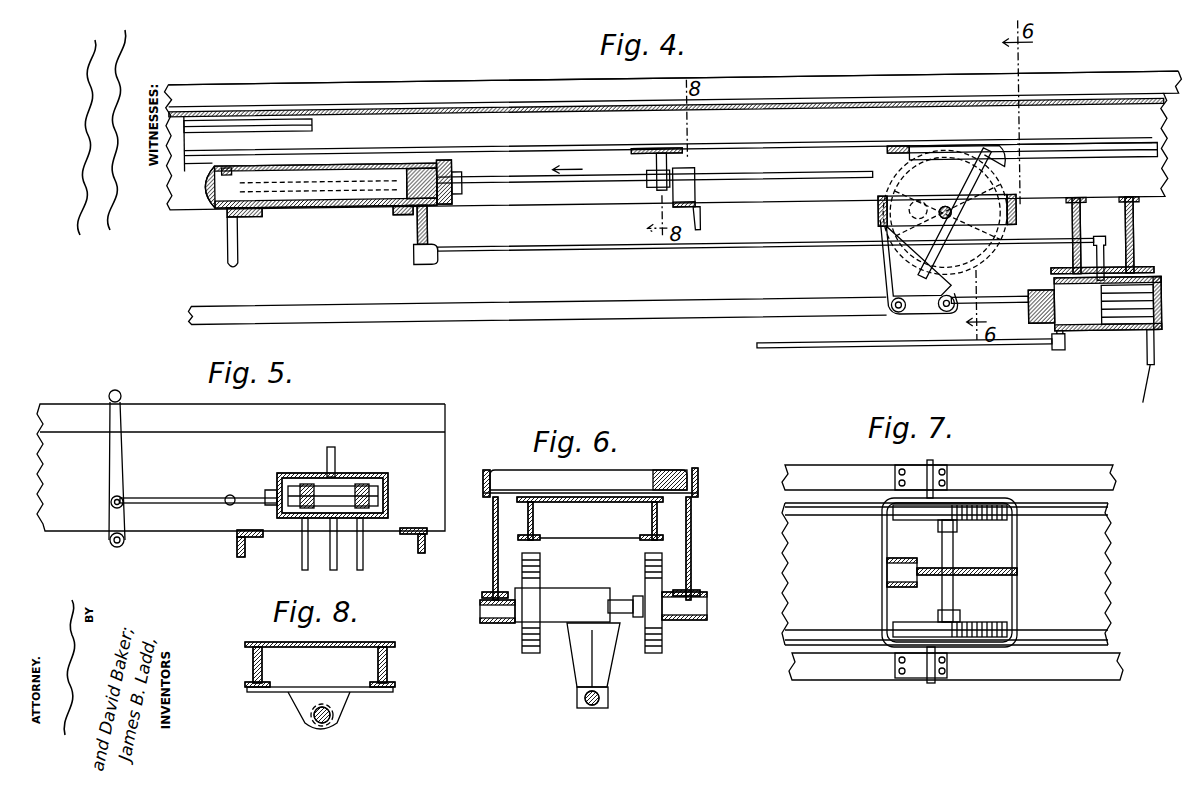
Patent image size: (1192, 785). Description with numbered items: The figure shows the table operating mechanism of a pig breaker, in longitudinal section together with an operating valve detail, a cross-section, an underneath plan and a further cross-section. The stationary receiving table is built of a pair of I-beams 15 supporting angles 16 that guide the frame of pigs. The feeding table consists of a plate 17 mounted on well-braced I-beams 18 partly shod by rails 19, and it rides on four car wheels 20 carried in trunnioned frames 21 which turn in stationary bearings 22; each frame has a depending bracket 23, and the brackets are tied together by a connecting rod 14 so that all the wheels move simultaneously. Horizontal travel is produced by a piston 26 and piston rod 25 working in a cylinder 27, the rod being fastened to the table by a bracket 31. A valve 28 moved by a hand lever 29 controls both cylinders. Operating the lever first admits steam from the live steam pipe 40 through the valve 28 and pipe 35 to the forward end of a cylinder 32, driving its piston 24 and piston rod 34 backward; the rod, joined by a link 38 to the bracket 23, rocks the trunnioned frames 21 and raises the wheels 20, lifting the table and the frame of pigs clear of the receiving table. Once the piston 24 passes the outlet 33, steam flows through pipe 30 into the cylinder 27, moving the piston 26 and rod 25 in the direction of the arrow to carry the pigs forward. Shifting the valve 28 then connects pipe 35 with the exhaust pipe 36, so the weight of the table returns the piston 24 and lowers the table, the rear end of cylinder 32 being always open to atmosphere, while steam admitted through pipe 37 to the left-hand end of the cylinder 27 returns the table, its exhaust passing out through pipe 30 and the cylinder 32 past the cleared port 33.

In FIG. 4, the connecting rod 14 is at (582, 320).
In FIG. 4, the I-beams 15 is at (193, 197).
In FIG. 5, the I-beams 15 is at (192, 521).
In FIG. 6, the I-beams 15 is at (493, 549).
In FIG. 7, the I-beams 15 is at (825, 470).
In FIG. 4, the angles 16 is at (359, 72).
In FIG. 6, the angles 16 is at (487, 472).
In FIG. 4, the plate 17 is at (499, 107).
In FIG. 6, the plate 17 is at (586, 502).
In FIG. 7, the plate 17 is at (795, 576).
In FIG. 8, the plate 17 is at (323, 647).
In FIG. 4, the I-beams 18 is at (558, 128).
In FIG. 6, the I-beams 18 is at (534, 523).
In FIG. 7, the I-beams 18 is at (830, 516).
In FIG. 8, the I-beams 18 is at (253, 665).
In FIG. 4, the rails 19 is at (197, 165).
In FIG. 6, the rails 19 is at (540, 547).
In FIG. 7, the rails 19 is at (1055, 516).
In FIG. 4, the wheels 20 is at (990, 199).
In FIG. 6, the wheels 20 is at (525, 650).
In FIG. 7, the wheels 20 is at (978, 520).
In FIG. 4, the trunnioned frames 21 is at (878, 206).
In FIG. 6, the trunnioned frames 21 is at (590, 596).
In FIG. 7, the trunnioned frames 21 is at (1017, 558).
In FIG. 4, the stationary bearings 22 is at (880, 231).
In FIG. 6, the stationary bearings 22 is at (487, 614).
In FIG. 7, the stationary bearings 22 is at (935, 465).
In FIG. 4, the brackets 23 is at (880, 270).
In FIG. 6, the brackets 23 is at (580, 662).
In FIG. 7, the brackets 23 is at (890, 572).
In FIG. 4, the piston 24 is at (1075, 335).
In FIG. 4, the piston rod 25 is at (519, 176).
In FIG. 8, the piston rod 25 is at (333, 717).
In FIG. 4, the piston 26 is at (405, 206).
In FIG. 4, the cylinder 27 is at (321, 198).
In FIG. 5, the valve 28 is at (343, 478).
In FIG. 5, the hand lever 29 is at (119, 460).
In FIG. 4, the pipe 30 is at (538, 250).
In FIG. 4, the bracket 31 is at (658, 189).
In FIG. 8, the bracket 31 is at (302, 714).
In FIG. 4, the cylinder 32 is at (1115, 321).
In FIG. 4, the outlet 33 is at (1130, 272).
In FIG. 4, the piston rod 34 is at (1003, 290).
In FIG. 6, the piston rod 34 is at (591, 708).
In FIG. 4, the pipe 35 is at (870, 351).
In FIG. 5, the pipe 35 is at (362, 555).
In FIG. 5, the exhaust pipe 36 is at (327, 455).
In FIG. 4, the pipe 37 is at (237, 255).
In FIG. 5, the pipe 37 is at (301, 556).
In FIG. 4, the link 38 is at (938, 313).
In FIG. 5, the live steam pipe 40 is at (333, 570).